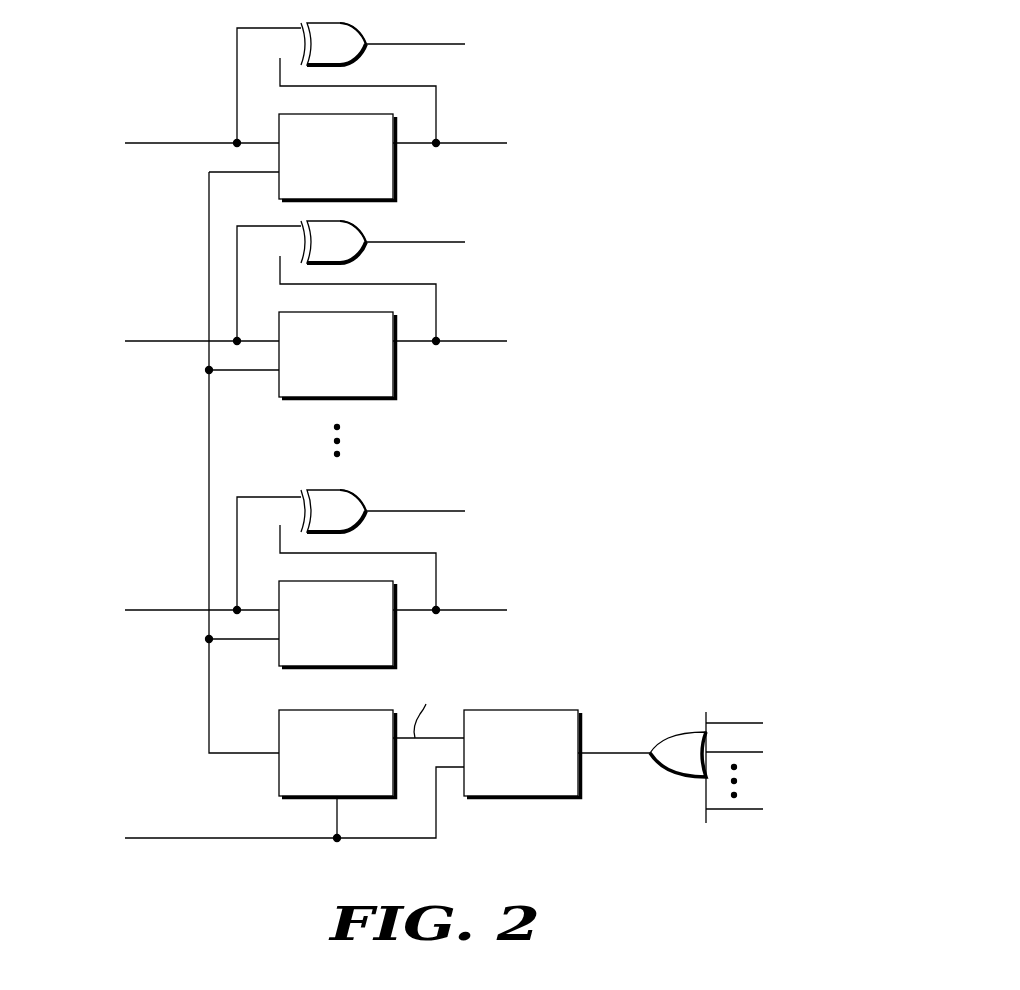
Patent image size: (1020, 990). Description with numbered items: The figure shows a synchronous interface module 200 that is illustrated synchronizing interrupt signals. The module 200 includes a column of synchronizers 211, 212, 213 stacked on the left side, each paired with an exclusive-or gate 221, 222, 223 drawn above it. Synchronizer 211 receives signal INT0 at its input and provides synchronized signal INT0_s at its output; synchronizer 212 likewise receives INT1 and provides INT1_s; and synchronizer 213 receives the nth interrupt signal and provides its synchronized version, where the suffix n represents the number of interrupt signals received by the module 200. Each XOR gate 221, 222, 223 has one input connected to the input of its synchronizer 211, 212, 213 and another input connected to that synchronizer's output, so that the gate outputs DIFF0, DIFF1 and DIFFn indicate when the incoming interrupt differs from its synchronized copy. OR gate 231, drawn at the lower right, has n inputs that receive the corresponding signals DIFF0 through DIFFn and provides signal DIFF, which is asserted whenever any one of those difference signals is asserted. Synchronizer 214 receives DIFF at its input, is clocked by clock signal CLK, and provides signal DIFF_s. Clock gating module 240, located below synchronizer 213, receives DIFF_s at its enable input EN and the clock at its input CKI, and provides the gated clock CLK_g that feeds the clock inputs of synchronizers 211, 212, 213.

The synchronous interface module 200 is at (436, 452).
The synchronizer 211 is at (366, 185).
The synchronizer 212 is at (366, 383).
The synchronizer 213 is at (366, 652).
The synchronizer 214 is at (528, 710).
The XOR gate 221 is at (369, 48).
The XOR gate 222 is at (369, 246).
The XOR gate 223 is at (352, 490).
The OR gate 231 is at (685, 731).
The clock gating module 240 is at (277, 777).